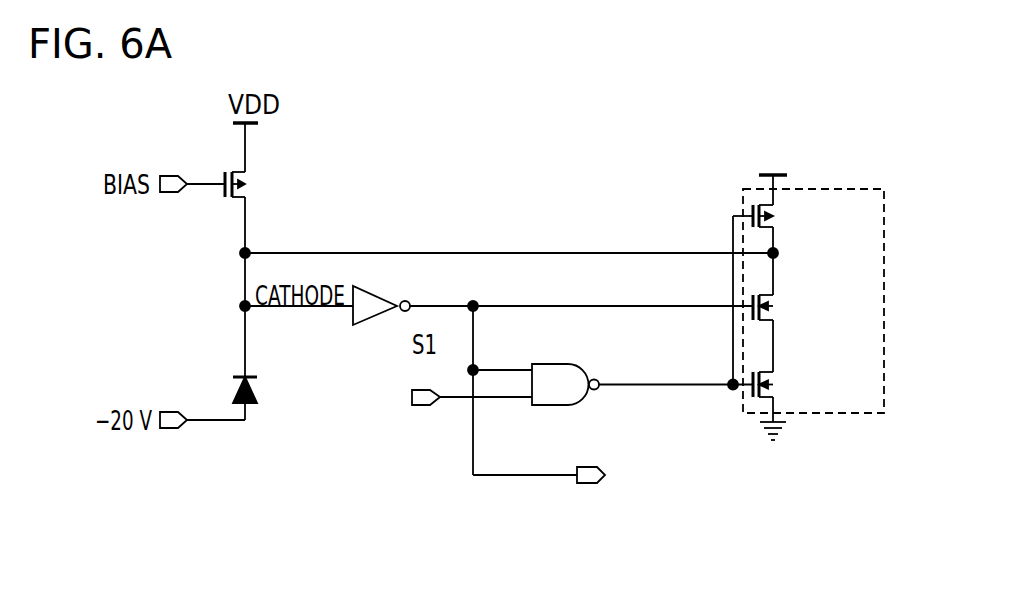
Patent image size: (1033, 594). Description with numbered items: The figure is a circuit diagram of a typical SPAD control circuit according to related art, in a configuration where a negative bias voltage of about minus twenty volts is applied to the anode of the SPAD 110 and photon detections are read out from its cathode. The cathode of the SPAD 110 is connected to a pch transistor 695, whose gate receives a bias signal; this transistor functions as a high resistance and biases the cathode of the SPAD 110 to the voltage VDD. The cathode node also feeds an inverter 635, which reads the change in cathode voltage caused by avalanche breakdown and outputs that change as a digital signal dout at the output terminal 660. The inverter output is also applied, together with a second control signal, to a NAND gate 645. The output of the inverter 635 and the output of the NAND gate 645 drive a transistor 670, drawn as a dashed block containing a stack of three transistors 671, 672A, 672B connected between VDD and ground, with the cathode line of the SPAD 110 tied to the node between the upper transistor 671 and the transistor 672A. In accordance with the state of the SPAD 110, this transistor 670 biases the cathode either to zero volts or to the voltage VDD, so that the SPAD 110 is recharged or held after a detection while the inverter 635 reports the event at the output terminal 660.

The pch transistor 695 is at (250, 190).
The SPAD 110 is at (258, 389).
The inverter 635 is at (372, 287).
The NAND gate 645 is at (546, 364).
The output terminal 660 is at (591, 466).
The transistor 670 is at (886, 216).
The transistor 671 is at (778, 216).
The transistor 672A is at (778, 313).
The transistor 672B is at (778, 392).